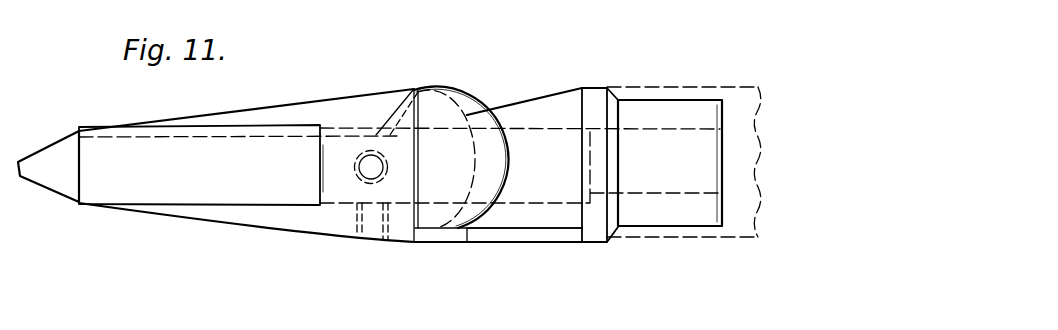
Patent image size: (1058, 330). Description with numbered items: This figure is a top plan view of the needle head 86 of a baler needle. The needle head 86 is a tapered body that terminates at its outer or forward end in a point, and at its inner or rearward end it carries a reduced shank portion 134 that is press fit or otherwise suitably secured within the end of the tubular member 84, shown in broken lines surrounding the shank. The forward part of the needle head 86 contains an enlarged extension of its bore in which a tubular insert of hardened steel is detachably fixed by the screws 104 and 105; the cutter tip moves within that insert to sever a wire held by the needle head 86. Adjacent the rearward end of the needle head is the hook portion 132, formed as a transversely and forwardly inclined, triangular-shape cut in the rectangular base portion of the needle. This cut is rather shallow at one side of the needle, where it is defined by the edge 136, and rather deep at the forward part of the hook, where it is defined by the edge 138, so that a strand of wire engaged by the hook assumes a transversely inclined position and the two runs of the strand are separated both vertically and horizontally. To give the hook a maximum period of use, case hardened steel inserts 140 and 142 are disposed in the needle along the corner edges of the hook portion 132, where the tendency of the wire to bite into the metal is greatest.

The tubular member 84 is at (678, 237).
The needle head 86 is at (183, 190).
The screw 104 is at (362, 240).
The screw 105 is at (362, 180).
The hook portion 132 is at (452, 97).
The reduced shank portion 134 is at (667, 98).
The edge 136 is at (525, 235).
The edge 138 is at (497, 113).
The case hardened steel insert 140 is at (440, 238).
The case hardened steel insert 142 is at (393, 105).